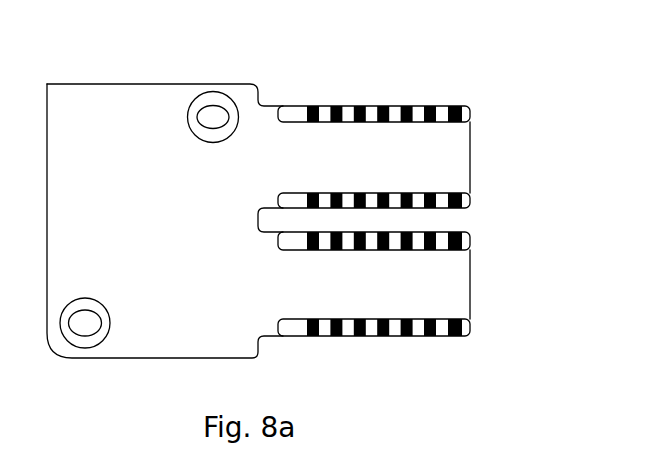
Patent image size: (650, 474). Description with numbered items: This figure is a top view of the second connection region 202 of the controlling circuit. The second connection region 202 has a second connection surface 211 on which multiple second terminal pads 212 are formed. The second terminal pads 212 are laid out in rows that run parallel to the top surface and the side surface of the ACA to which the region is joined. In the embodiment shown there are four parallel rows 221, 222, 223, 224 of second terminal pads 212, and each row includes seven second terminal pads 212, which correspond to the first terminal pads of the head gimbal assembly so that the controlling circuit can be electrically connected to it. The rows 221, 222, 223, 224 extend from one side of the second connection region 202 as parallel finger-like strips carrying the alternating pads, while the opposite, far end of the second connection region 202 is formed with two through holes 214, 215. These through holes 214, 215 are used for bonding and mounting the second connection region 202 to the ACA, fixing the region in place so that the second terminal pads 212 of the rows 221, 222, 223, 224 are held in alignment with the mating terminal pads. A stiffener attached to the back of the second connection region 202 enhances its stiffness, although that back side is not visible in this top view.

The second connection region 202 is at (112, 119).
The second connection surface 211 is at (288, 138).
The second terminal pads 212 is at (383, 106).
The through hole 214 is at (213, 117).
The through hole 215 is at (83, 322).
The first row of second terminal pads 221 is at (465, 113).
The second row of second terminal pads 222 is at (465, 199).
The third row of second terminal pads 223 is at (465, 242).
The fourth row of second terminal pads 224 is at (465, 327).